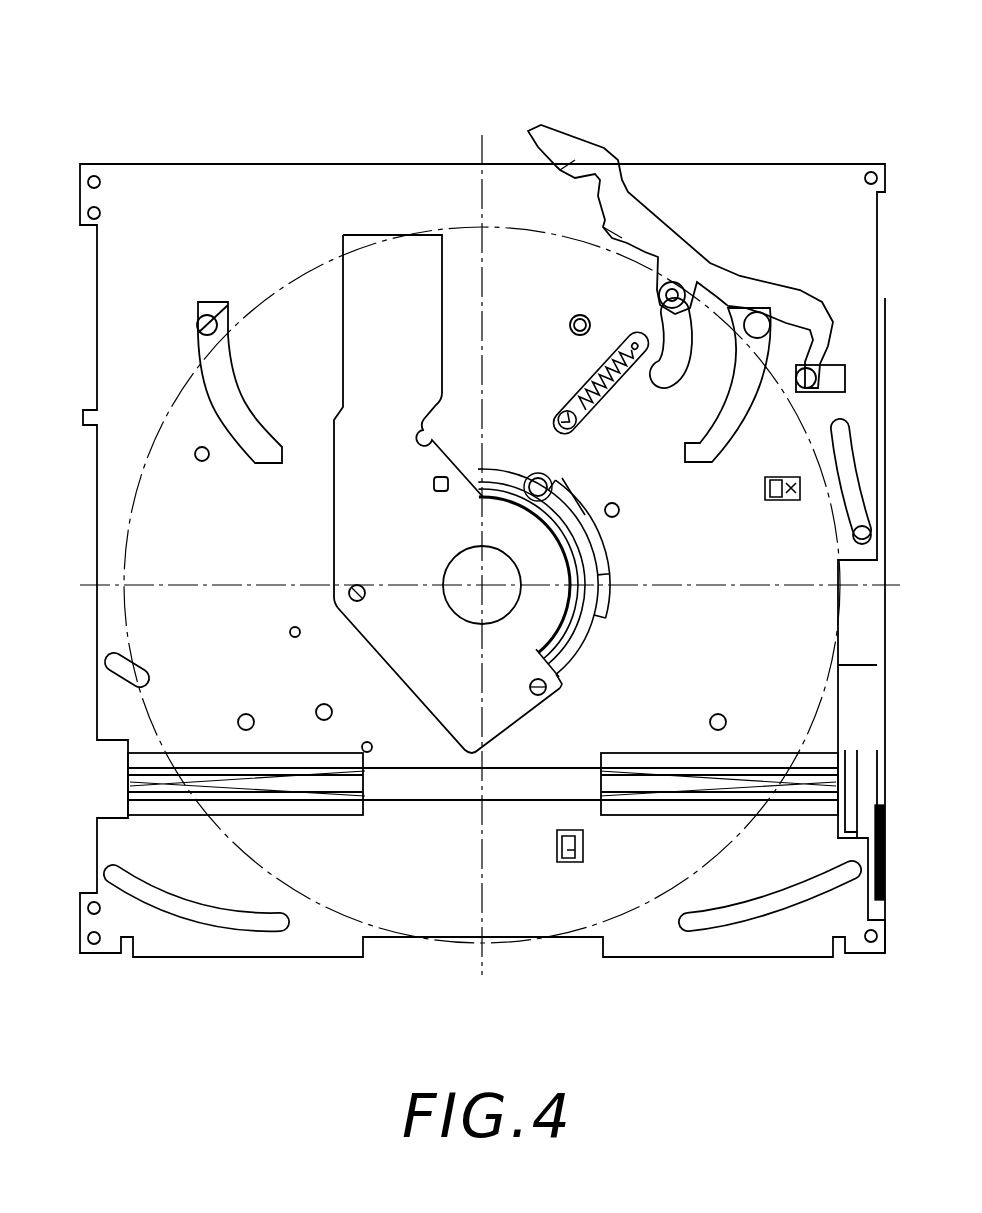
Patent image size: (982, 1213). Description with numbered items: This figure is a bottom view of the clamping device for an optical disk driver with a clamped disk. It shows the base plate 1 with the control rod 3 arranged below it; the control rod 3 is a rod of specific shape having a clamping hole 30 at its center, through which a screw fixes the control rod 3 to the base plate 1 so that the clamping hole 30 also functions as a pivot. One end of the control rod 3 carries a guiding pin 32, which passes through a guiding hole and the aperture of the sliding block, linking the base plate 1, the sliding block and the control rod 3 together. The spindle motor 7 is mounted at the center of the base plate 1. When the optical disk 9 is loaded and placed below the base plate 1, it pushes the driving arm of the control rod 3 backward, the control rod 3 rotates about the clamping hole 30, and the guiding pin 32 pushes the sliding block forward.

The base plate 1 is at (777, 196).
The control rod 3 is at (571, 140).
The spindle motor 7 is at (570, 612).
The optical disk 9 is at (462, 224).
The clamping hole 30 is at (710, 293).
The guiding pin 32 is at (801, 393).